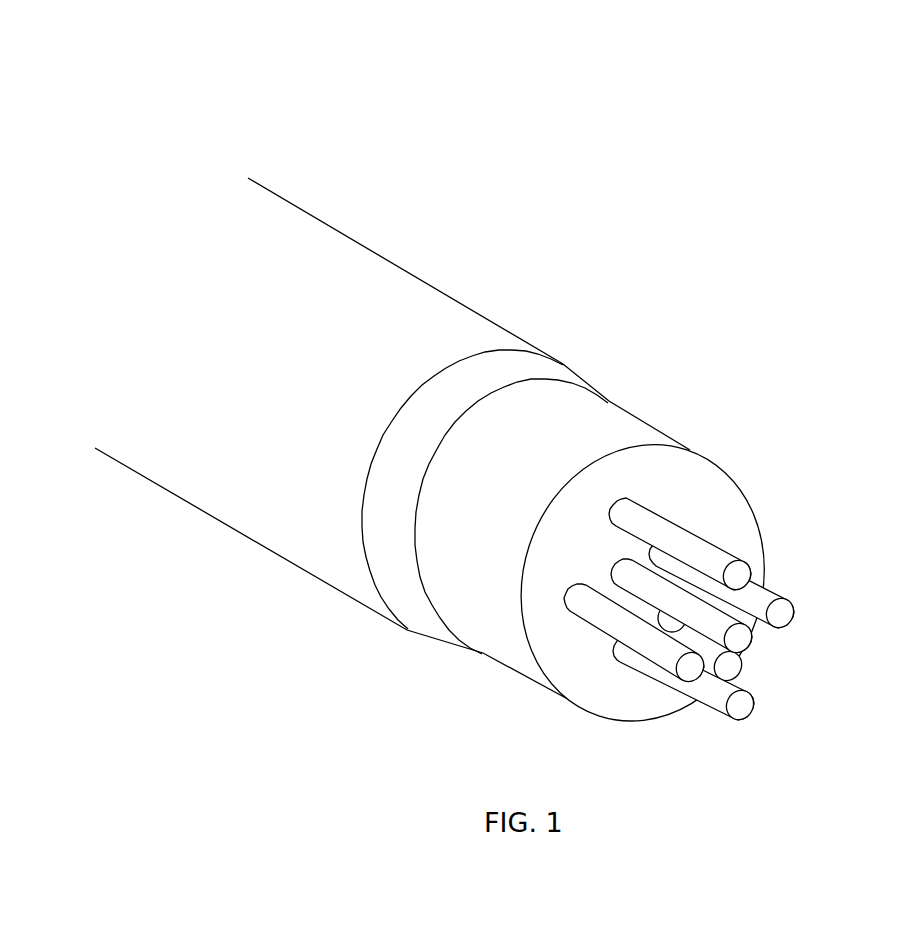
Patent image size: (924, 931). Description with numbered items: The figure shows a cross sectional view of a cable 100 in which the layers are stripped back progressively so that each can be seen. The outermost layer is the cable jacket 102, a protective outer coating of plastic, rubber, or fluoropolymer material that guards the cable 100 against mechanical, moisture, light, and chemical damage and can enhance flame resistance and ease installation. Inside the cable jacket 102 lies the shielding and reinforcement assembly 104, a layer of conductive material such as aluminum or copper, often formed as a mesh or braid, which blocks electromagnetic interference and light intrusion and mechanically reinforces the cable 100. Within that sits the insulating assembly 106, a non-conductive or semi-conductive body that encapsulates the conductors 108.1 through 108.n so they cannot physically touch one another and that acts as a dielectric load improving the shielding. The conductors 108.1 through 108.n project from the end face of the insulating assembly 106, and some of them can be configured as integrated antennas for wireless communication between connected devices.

The cable 100 is at (876, 127).
The cable jacket 102 is at (379, 252).
The shielding and reinforcement assembly 104 is at (573, 364).
The insulating assembly 106 is at (653, 424).
The conductor 108.1 is at (691, 532).
The conductor 108.n is at (709, 711).